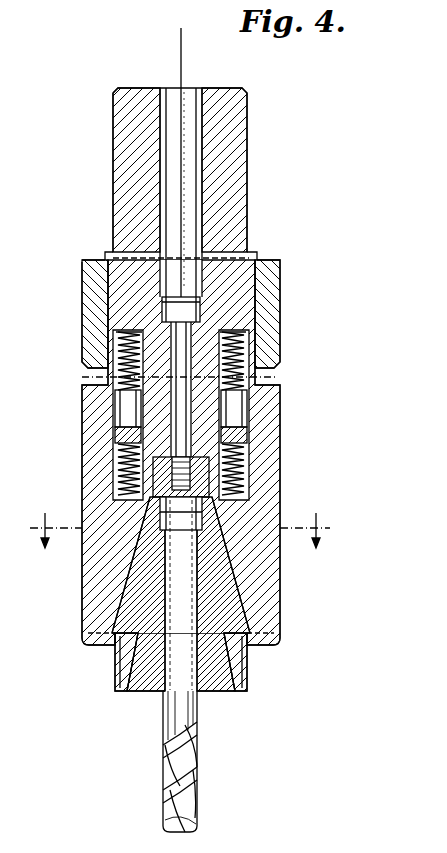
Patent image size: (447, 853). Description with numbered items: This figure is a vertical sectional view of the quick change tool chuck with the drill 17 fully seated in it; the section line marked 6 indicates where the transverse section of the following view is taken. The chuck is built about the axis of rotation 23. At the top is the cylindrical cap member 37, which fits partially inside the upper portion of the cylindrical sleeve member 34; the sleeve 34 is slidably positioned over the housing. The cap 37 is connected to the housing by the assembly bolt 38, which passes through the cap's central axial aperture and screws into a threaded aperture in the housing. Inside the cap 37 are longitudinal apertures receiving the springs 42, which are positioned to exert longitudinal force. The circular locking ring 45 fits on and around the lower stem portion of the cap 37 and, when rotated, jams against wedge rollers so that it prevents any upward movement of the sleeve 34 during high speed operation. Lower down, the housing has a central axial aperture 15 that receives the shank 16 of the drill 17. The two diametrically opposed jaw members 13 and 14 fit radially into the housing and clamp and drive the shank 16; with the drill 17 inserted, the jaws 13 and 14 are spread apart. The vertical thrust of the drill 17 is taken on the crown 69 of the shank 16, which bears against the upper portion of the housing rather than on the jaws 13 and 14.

The axis of rotation 23 is at (182, 66).
The cylindrical cap member 37 is at (230, 180).
The circular locking ring 45 is at (88, 272).
The assembly bolt 38 is at (200, 320).
The springs 42 is at (120, 350).
The cylindrical sleeve member 34 is at (235, 432).
The central axial aperture 15 is at (205, 463).
The crown of the shank 69 is at (160, 483).
The jaw member 13 is at (140, 567).
The jaw member 14 is at (214, 570).
The shank 16 is at (190, 712).
The drill 17 is at (214, 777).
The section line 6- 6 is at (181, 524).